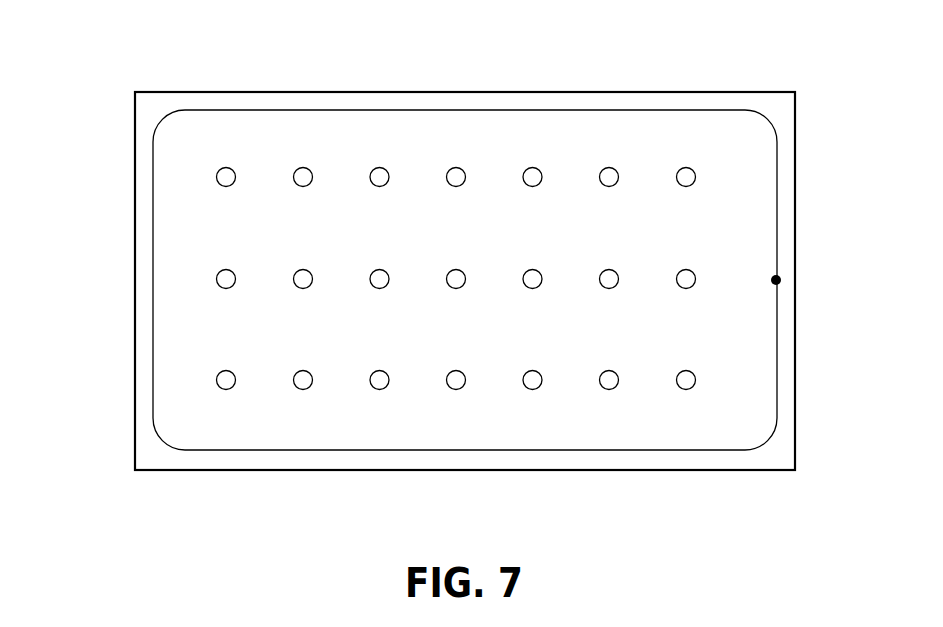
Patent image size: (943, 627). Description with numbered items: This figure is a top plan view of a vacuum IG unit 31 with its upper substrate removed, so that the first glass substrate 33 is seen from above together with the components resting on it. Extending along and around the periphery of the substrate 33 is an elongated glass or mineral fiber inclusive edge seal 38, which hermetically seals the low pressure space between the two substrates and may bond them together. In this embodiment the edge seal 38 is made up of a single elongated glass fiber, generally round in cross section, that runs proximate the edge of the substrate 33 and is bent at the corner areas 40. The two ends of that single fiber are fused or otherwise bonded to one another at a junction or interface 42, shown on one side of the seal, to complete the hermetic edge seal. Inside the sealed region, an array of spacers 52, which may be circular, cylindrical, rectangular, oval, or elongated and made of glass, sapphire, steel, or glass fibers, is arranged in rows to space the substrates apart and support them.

The vacuum IG unit 31 is at (100, 347).
The first glass substrate 33 is at (773, 105).
The edge seal 38 is at (405, 112).
The corner areas 40 is at (157, 120).
The junction 42 is at (783, 273).
The spacers 52 is at (610, 175).